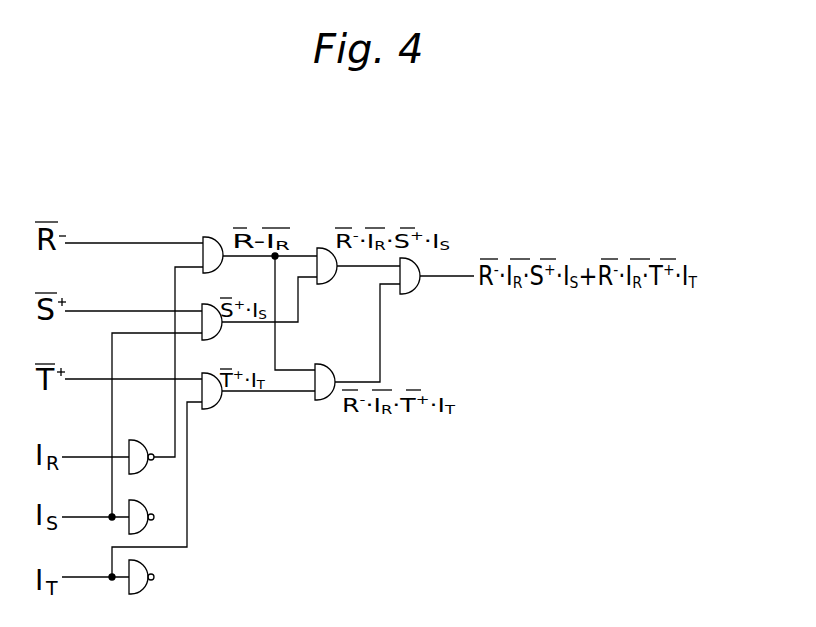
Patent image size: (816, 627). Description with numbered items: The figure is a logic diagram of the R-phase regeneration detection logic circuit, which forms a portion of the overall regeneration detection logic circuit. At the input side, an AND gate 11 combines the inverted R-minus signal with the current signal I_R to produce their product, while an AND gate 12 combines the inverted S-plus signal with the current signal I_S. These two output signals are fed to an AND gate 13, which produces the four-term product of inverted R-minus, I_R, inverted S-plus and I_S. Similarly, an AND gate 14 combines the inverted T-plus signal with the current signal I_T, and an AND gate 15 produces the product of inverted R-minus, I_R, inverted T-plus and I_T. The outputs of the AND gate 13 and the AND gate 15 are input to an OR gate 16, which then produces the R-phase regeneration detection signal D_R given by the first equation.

The AND gate 11 is at (222, 237).
The AND gate 12 is at (214, 304).
The AND gate 13 is at (330, 248).
The AND gate 14 is at (214, 409).
The AND gate 15 is at (321, 400).
The OR gate 16 is at (405, 293).